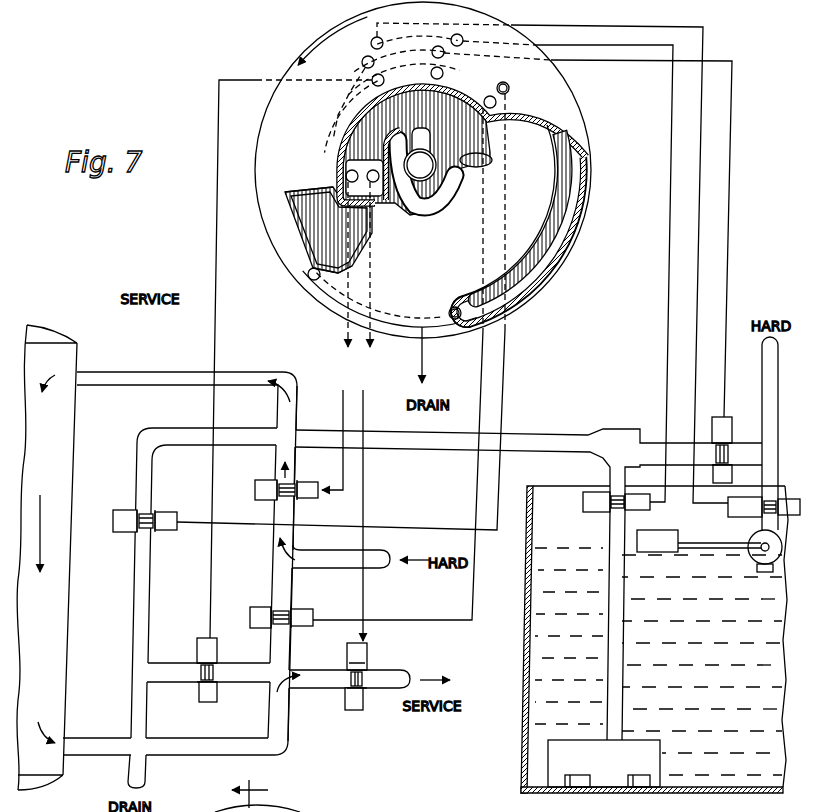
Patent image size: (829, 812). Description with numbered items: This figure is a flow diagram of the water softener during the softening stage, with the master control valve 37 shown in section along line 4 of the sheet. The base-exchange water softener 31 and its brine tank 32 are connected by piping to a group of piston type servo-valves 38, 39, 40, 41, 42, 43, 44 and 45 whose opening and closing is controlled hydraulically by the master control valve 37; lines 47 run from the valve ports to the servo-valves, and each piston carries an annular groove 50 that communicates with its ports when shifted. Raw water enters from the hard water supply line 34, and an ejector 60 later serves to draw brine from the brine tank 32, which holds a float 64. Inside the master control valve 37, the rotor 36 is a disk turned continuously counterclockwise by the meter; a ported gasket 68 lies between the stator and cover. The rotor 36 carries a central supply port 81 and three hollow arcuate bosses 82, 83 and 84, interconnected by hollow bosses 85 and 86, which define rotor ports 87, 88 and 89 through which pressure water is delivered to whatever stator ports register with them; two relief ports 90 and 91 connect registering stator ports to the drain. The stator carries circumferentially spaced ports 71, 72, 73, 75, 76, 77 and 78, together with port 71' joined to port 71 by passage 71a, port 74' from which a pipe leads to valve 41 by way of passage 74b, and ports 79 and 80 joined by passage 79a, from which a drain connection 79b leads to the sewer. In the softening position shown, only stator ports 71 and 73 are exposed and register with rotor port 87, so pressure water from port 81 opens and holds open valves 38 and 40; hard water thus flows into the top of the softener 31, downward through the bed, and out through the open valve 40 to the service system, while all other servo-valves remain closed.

The section line 4 is at (257, 794).
The base-exchange water softener 31 is at (60, 470).
The brine tank 32 is at (524, 722).
The raw water supply line 34 is at (333, 565).
The rotor 36 is at (275, 214).
The master control valve 37 is at (529, 310).
The valve 38 is at (268, 498).
The valve 39 is at (280, 617).
The valve 40 is at (350, 693).
The valve 41 is at (205, 674).
The valve 42 is at (137, 519).
The valve 43 is at (760, 508).
The valve 44 is at (603, 498).
The valve 45 is at (731, 443).
The pipes 47 is at (347, 390).
The annular groove 50 is at (773, 370).
The ejector 60 is at (622, 432).
The float 64 is at (733, 537).
The ported gasket 68 is at (490, 87).
The stator port 71 is at (329, 257).
The stator port 71' is at (351, 55).
The passage 71a is at (336, 121).
The stator port 72 is at (496, 103).
The stator port 73 is at (350, 167).
The stator port 74' is at (314, 334).
The passage 74b is at (579, 216).
The stator port 75 is at (509, 88).
The stator port 76 is at (372, 40).
The stator port 77 is at (463, 40).
The stator port 78 is at (443, 72).
The stator port 79 is at (308, 277).
The passage 79a is at (412, 306).
The drain pipe connection 79b is at (422, 360).
The stator port 80 is at (456, 307).
The central port 81 is at (420, 154).
The hollow arcuate boss 82 is at (345, 157).
The hollow arcuate boss 83 is at (365, 255).
The hollow arcuate boss 84 is at (537, 256).
The hollow boss 85 is at (420, 212).
The hollow boss 86 is at (529, 150).
The rotor port 87 is at (358, 113).
The rotor port 88 is at (343, 273).
The rotor port 89 is at (528, 288).
The relief port 90 is at (470, 170).
The relief port 91 is at (300, 195).